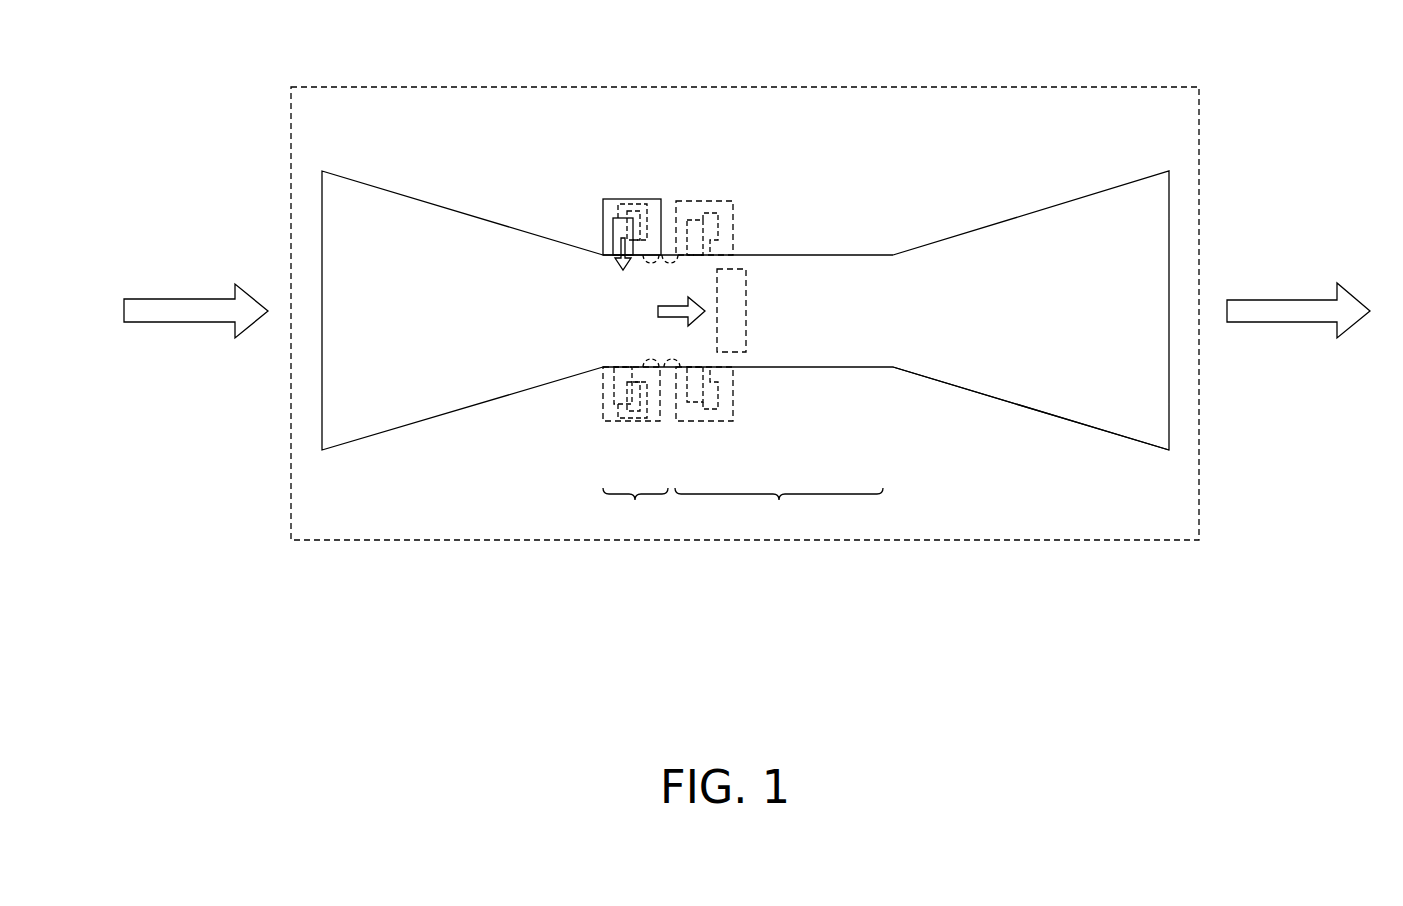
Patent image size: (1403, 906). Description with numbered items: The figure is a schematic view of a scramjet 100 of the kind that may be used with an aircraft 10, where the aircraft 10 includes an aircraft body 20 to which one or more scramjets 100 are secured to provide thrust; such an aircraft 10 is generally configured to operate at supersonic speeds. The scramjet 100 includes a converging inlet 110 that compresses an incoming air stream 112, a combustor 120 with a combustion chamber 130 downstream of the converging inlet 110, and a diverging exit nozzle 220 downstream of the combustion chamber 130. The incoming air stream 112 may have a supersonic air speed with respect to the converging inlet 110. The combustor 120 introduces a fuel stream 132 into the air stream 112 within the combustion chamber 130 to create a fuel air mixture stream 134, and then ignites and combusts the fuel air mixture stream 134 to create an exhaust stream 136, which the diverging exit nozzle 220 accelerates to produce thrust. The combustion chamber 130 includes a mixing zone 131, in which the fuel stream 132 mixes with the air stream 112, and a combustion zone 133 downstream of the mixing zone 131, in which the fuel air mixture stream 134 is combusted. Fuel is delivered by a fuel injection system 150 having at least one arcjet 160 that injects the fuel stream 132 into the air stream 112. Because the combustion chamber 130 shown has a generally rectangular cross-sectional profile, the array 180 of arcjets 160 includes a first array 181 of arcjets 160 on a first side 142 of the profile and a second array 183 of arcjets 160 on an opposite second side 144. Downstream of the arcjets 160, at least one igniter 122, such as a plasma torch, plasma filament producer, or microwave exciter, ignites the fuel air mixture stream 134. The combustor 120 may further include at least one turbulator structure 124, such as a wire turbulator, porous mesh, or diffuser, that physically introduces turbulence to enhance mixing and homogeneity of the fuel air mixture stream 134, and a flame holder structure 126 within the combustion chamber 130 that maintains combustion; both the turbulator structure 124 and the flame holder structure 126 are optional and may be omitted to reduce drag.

The aircraft 10 is at (745, 277).
The aircraft body 20 is at (432, 86).
The scramjet 100 is at (1103, 117).
The converging inlet 110 is at (370, 437).
The incoming air stream 112 is at (191, 322).
The combustor 120 is at (797, 205).
The igniter 122 is at (692, 212).
The turbulator structure 124 is at (672, 263).
The flame holder structure 126 is at (748, 325).
The combustion chamber 130 is at (810, 255).
The mixing zone 131 is at (399, 353).
The fuel stream 132 is at (618, 263).
The combustion zone 133 is at (810, 315).
The fuel air mixture stream 134 is at (656, 320).
The exhaust stream 136 is at (1279, 322).
The first side 142 is at (752, 255).
The second side 144 is at (746, 367).
The fuel injection system 150 is at (517, 583).
The arcjet 160 is at (677, 127).
The array of arcjets 180 is at (630, 308).
The first array of arcjets 181 is at (610, 215).
The second array of arcjets 183 is at (653, 403).
The diverging exit nozzle 220 is at (1085, 422).